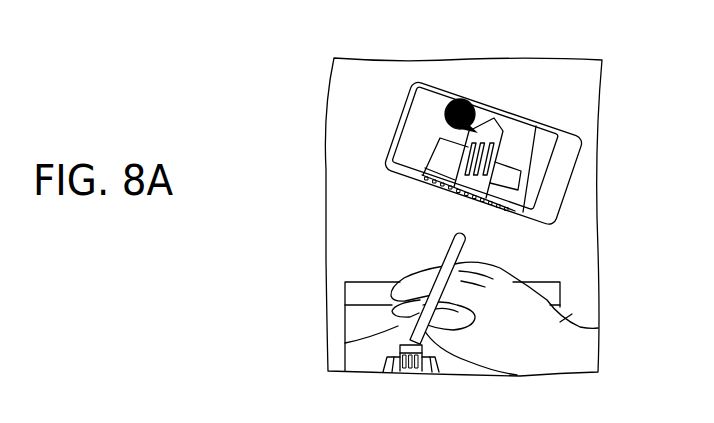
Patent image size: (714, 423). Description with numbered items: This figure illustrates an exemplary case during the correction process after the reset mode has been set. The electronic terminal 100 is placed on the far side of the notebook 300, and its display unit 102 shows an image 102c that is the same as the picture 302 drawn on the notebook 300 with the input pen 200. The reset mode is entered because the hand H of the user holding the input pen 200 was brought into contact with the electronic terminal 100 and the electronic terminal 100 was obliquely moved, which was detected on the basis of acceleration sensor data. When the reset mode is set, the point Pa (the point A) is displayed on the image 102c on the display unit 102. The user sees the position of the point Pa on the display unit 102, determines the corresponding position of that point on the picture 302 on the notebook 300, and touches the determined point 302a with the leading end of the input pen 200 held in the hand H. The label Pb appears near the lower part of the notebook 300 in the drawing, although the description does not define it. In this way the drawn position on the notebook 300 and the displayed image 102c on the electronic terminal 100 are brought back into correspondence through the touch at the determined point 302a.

The electronic terminal 100 is at (578, 136).
The display unit 102 is at (412, 92).
The image 102c is at (524, 132).
The point Pa is at (488, 127).
The notebook 300 is at (350, 315).
The input pen 200 is at (400, 332).
The picture 302 is at (452, 367).
The determined point 302a is at (396, 375).
The hand H is at (577, 313).
The pen position Pb is at (540, 416).